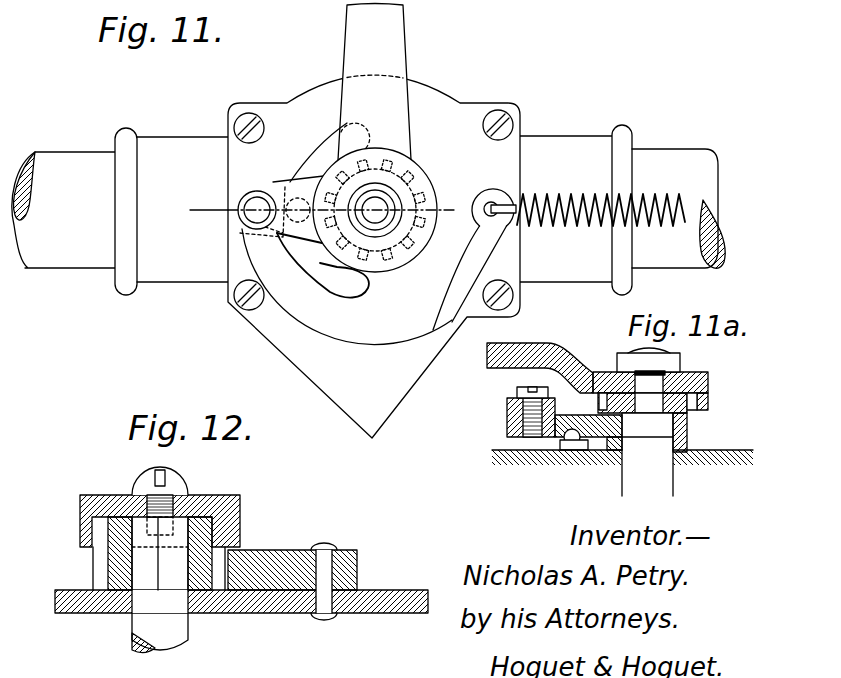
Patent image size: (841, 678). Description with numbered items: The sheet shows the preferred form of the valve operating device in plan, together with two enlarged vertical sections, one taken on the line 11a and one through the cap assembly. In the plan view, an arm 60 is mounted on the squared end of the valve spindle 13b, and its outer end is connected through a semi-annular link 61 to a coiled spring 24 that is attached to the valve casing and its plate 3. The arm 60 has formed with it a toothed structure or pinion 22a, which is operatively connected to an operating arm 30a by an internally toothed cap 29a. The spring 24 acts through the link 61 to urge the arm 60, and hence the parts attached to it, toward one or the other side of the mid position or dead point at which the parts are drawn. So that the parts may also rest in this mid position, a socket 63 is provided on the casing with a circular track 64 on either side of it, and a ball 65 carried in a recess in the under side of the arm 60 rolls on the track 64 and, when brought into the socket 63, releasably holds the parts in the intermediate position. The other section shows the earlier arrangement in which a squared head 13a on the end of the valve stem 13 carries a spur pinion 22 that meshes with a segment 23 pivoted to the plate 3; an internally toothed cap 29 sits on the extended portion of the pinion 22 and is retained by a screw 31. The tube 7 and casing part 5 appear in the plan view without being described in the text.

In FIG. 11, the plate 3 is at (374, 256).
In FIG. 11A, the plate 3 is at (524, 466).
In FIG. 12, the plate 3 is at (393, 593).
In FIG. 11, the casing 5 is at (327, 84).
In FIG. 11, the tube 7 is at (368, 210).
In FIG. 11, the section line 11a— 11a is at (320, 212).
In FIG. 11A, the valve stem 13 is at (647, 466).
In FIG. 12, the valve stem 13 is at (160, 585).
In FIG. 12, the squared head 13a is at (160, 553).
In FIG. 11A, the valve spindle 13b is at (660, 424).
In FIG. 12, the spur pinion 22 is at (98, 567).
In FIG. 11, the toothed structure or pinion 22a is at (417, 216).
In FIG. 11A, the toothed structure or pinion 22a is at (697, 401).
In FIG. 12, the segment 23 is at (277, 556).
In FIG. 11, the coiled spring 24 is at (562, 193).
In FIG. 12, the cap 29 is at (229, 496).
In FIG. 11A, the internally toothed cap 29a is at (708, 380).
In FIG. 11, the operating arm 30a is at (374, 82).
In FIG. 11A, the operating arm 30a is at (540, 343).
In FIG. 11, the screw 31 is at (375, 210).
In FIG. 11A, the screw 31 is at (646, 363).
In FIG. 12, the screw 31 is at (147, 483).
In FIG. 11, the arm 60 is at (274, 190).
In FIG. 11A, the arm 60 is at (507, 425).
In FIG. 11, the link 61 is at (378, 267).
In FIG. 11A, the link 61 is at (516, 398).
In FIG. 11A, the socket 63 is at (578, 452).
In FIG. 11, the circular track 64 is at (336, 142).
In FIG. 11A, the circular track 64 is at (565, 456).
In FIG. 11, the ball 65 is at (296, 197).
In FIG. 11A, the ball 65 is at (566, 445).